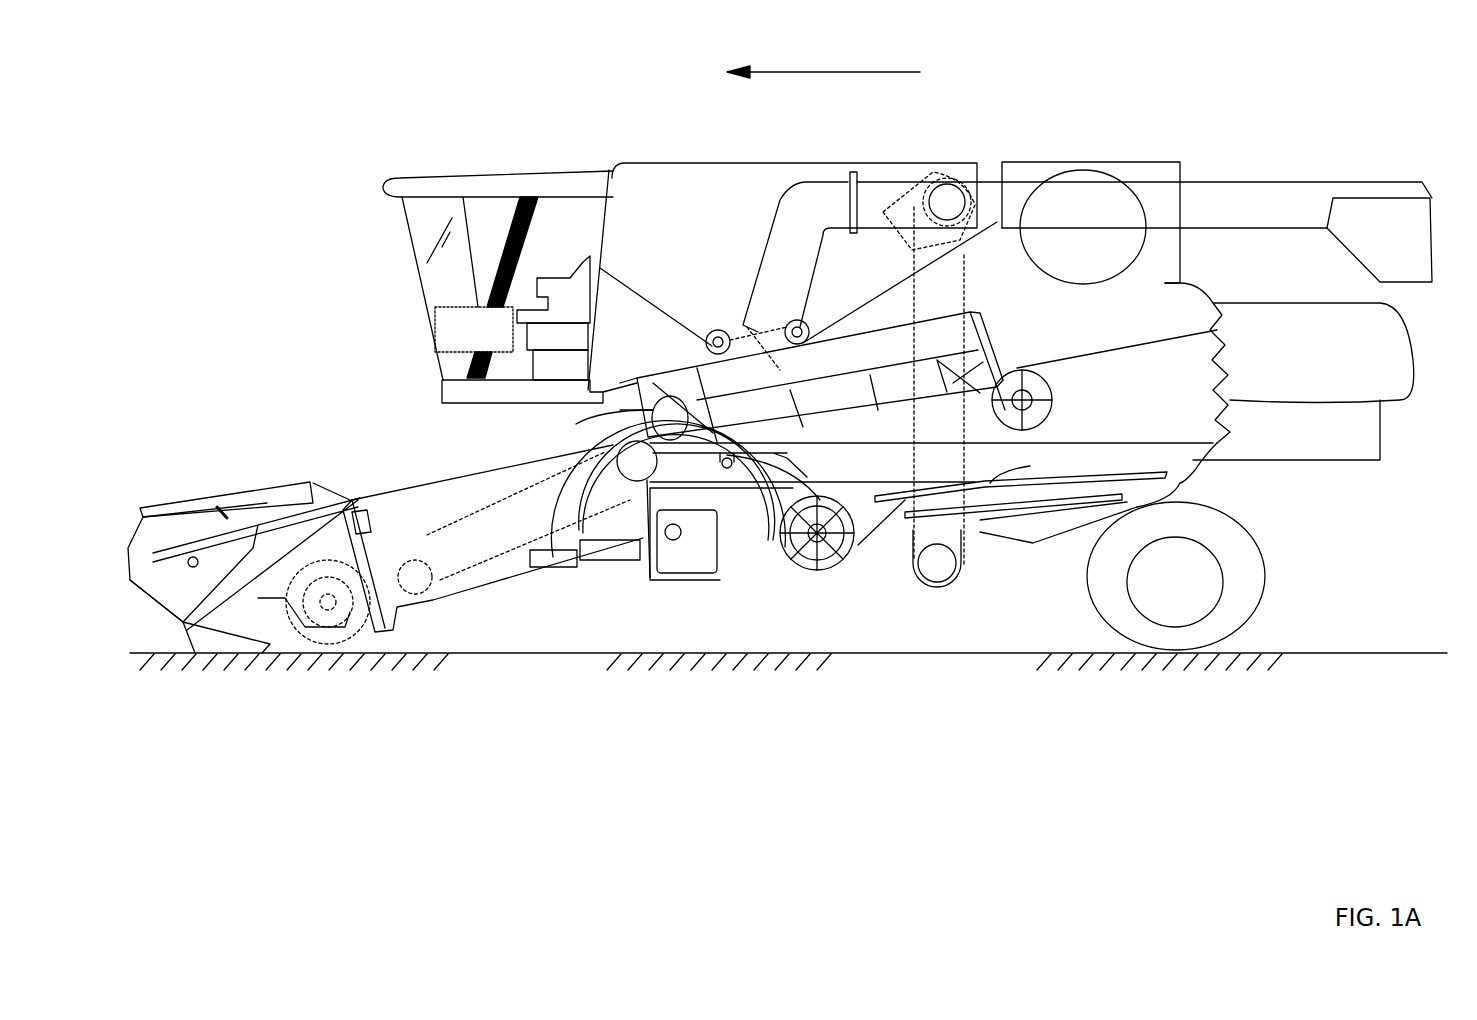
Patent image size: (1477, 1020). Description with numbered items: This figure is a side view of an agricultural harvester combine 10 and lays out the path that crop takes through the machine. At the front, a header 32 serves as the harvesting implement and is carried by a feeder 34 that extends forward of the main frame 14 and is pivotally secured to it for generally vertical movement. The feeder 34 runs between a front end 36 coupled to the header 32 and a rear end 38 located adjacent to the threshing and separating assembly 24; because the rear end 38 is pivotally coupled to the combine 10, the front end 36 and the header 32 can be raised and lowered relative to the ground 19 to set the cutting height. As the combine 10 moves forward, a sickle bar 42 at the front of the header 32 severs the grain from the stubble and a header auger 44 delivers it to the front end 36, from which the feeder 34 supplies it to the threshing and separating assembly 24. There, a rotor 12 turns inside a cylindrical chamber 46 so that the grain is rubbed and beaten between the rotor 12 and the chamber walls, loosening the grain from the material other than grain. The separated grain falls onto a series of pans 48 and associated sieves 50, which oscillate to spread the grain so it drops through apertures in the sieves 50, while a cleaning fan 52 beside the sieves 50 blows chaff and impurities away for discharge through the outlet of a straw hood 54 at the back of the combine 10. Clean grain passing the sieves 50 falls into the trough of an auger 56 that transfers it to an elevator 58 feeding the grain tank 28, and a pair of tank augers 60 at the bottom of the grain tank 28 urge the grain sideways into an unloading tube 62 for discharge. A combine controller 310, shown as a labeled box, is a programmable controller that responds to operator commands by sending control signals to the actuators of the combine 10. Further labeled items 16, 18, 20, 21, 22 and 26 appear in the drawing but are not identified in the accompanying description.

The agricultural harvester combine 10 is at (448, 120).
The rotor 12 is at (676, 376).
The main frame 14 is at (1213, 490).
The front wheels 16 is at (606, 618).
The rear wheels 18 is at (1252, 587).
The ground 19 is at (160, 652).
The operator platform 20 is at (450, 397).
The forward direction of travel 21 is at (848, 72).
The operator cab 22 is at (433, 280).
The threshing and separating assembly 24 is at (803, 377).
The cleaning system 26 is at (896, 580).
The grain tank 28 is at (713, 163).
The header 32 is at (185, 487).
The feeder 34 is at (423, 476).
The front end 36 is at (302, 535).
The rear end 38 is at (576, 424).
The sickle bar 42 is at (192, 635).
The header auger 44 is at (365, 655).
The cylindrical chamber 46 is at (868, 342).
The pans 48 is at (825, 489).
The sieves 50 is at (990, 483).
The cleaning fan 52 is at (815, 574).
The straw hood 54 is at (1405, 363).
The auger 56 is at (945, 582).
The elevator 58 is at (973, 263).
The tank augers 60 is at (723, 328).
The unloading tube 62 is at (1247, 197).
The combine controller 310 is at (474, 329).